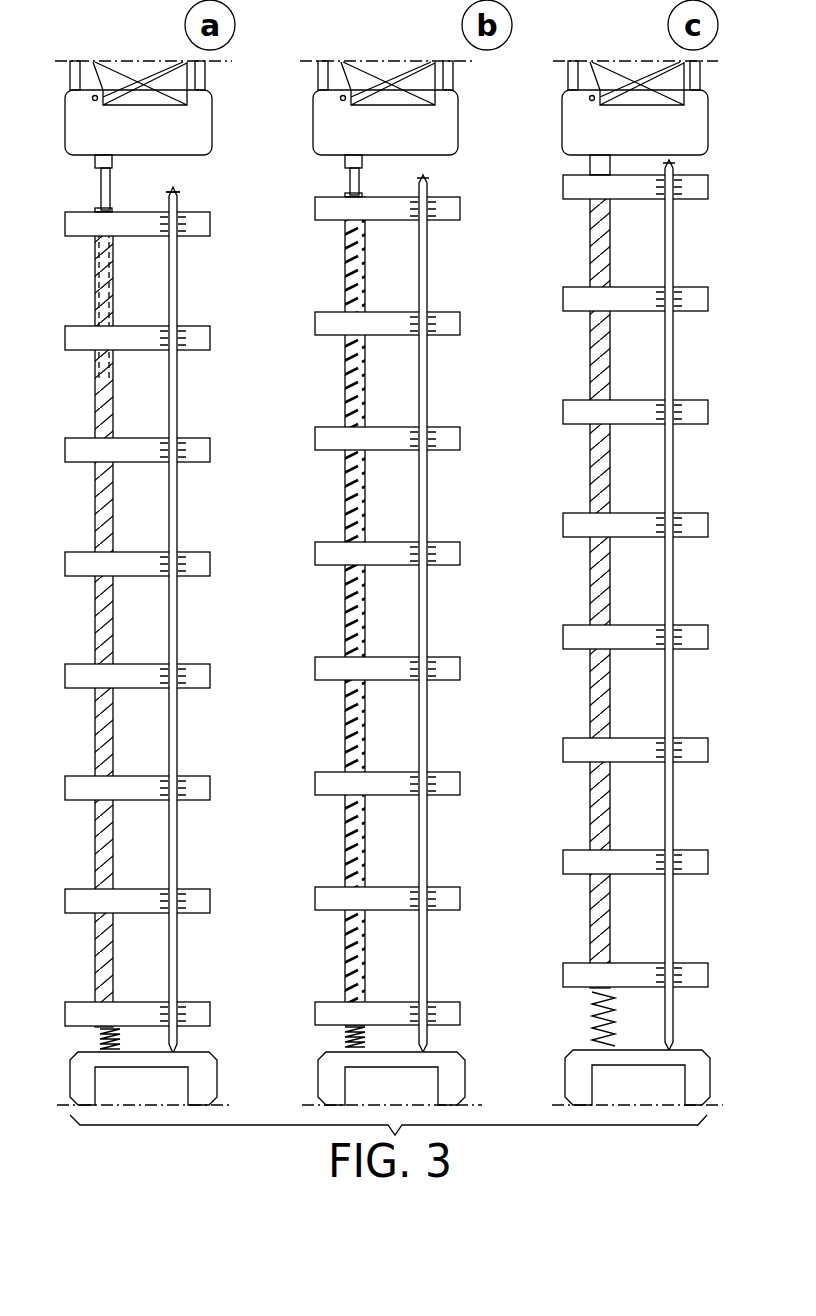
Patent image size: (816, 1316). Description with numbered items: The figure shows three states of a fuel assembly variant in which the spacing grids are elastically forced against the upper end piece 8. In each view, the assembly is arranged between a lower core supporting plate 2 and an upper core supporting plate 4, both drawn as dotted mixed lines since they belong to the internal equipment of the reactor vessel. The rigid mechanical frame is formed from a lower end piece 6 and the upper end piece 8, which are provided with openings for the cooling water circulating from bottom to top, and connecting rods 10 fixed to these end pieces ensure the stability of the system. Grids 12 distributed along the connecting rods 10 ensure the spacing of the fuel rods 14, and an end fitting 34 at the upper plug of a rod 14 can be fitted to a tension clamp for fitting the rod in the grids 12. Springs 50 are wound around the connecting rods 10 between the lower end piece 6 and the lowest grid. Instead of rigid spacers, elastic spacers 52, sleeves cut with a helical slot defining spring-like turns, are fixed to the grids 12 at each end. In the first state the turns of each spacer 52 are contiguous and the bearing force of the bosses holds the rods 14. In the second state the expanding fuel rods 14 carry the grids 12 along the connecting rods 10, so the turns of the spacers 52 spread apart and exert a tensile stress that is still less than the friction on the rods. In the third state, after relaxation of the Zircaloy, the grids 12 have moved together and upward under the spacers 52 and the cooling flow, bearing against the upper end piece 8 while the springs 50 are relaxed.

The lower core supporting plate 2 is at (214, 1105).
The upper core supporting plate 4 is at (217, 63).
The lower end piece 6 is at (205, 1055).
The upper end piece 8 is at (198, 132).
The connecting rods 10 is at (102, 190).
The grids 12 is at (200, 229).
The fuel rods 14 is at (174, 290).
The end fitting 34 is at (172, 192).
The springs 50 is at (103, 1042).
The spacer 52 is at (96, 526).